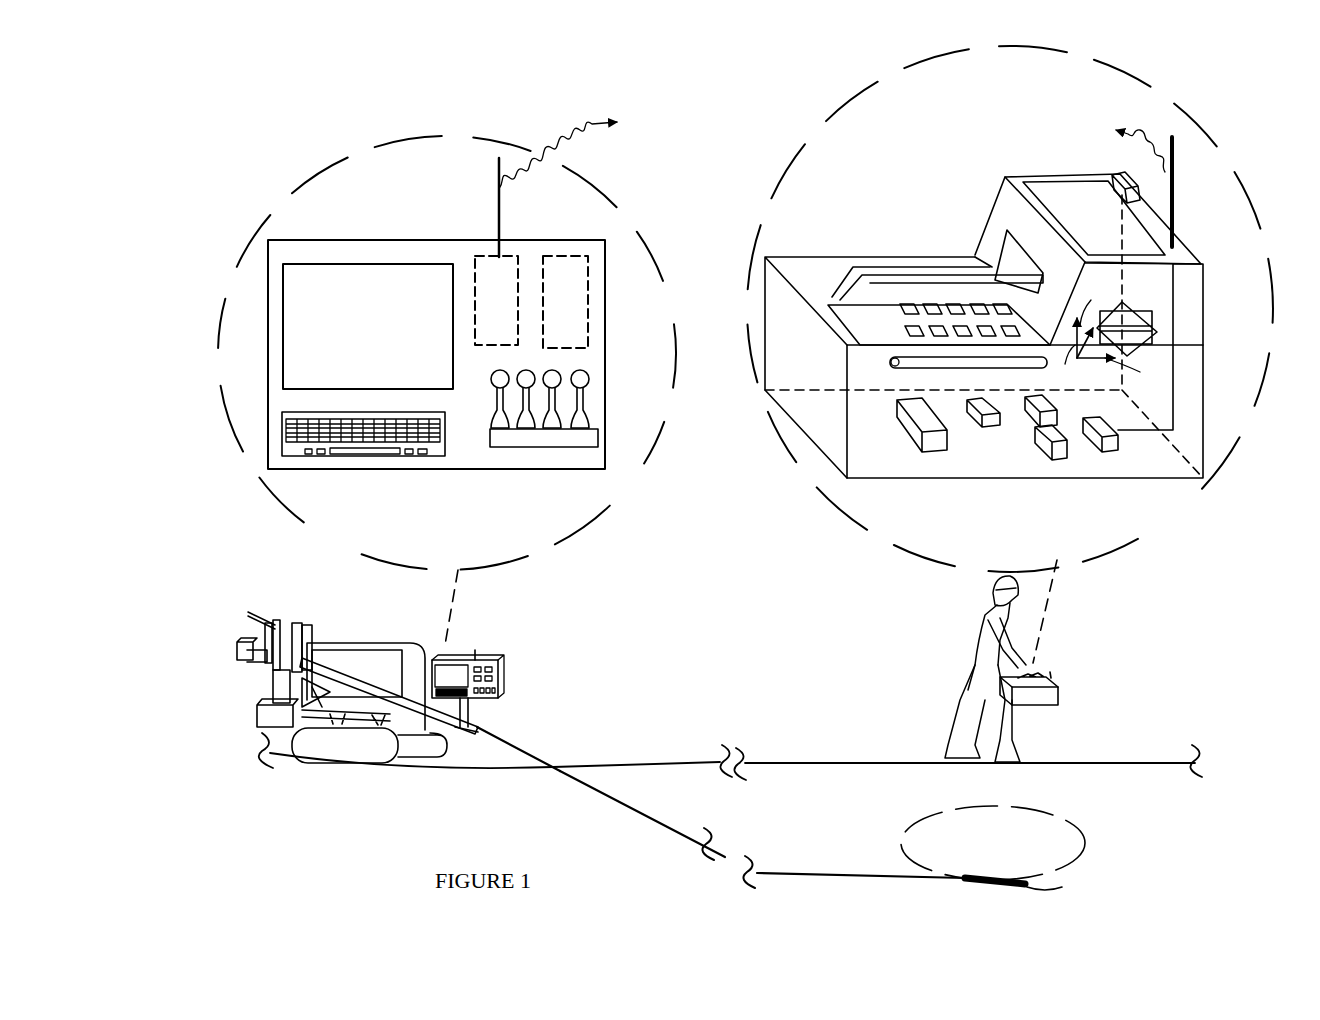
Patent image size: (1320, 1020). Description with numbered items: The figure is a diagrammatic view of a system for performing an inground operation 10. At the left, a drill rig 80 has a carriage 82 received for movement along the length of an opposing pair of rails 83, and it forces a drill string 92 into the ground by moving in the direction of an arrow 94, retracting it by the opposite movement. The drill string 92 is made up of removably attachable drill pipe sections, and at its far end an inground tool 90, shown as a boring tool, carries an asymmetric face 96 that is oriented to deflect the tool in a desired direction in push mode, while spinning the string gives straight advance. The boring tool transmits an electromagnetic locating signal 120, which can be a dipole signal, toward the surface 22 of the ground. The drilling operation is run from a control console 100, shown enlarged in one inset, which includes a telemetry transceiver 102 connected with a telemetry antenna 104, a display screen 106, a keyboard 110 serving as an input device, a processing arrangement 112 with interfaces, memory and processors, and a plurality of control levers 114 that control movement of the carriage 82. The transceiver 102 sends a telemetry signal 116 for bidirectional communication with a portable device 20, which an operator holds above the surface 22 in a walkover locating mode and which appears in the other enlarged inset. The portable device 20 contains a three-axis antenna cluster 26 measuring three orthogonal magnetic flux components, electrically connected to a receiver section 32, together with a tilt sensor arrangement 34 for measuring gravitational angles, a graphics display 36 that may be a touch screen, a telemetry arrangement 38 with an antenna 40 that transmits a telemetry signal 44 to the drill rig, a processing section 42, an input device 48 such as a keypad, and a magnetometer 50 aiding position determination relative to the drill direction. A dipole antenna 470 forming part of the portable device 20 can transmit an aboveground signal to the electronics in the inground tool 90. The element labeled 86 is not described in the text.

The system for performing an inground operation 10 is at (697, 110).
The portable device 20 is at (1064, 170).
The surface of the ground 22 is at (838, 762).
The three-axis antenna cluster 26 is at (1150, 348).
The receiver section 32 is at (978, 420).
The tilt sensor arrangement 34 is at (1055, 460).
The graphics display 36 is at (1050, 178).
The telemetry arrangement 38 is at (1108, 452).
The antenna 40 is at (1176, 205).
The processing section 42 is at (920, 448).
The telemetry signal 44 is at (1140, 133).
The input device 48 is at (832, 318).
The magnetometer 50 is at (1030, 412).
The drill rig 80 is at (330, 765).
The carriage 82 is at (318, 628).
The rails 83 is at (460, 763).
The drill string entry 86 is at (520, 770).
The inground tool 90 is at (985, 878).
The drill string 92 is at (590, 794).
The arrow 94 is at (328, 602).
The asymmetric face 96 is at (1058, 887).
The control console 100 is at (505, 680).
The telemetry transceiver 102 is at (477, 265).
The telemetry antenna 104 is at (503, 224).
The display screen 106 is at (316, 262).
The keyboard 110 is at (358, 457).
The processing arrangement 112 is at (590, 316).
The control levers 114 is at (543, 447).
The telemetry signal 116 is at (548, 142).
The electromagnetic locating signal 120 is at (1063, 823).
The dipole antenna 470 is at (890, 360).